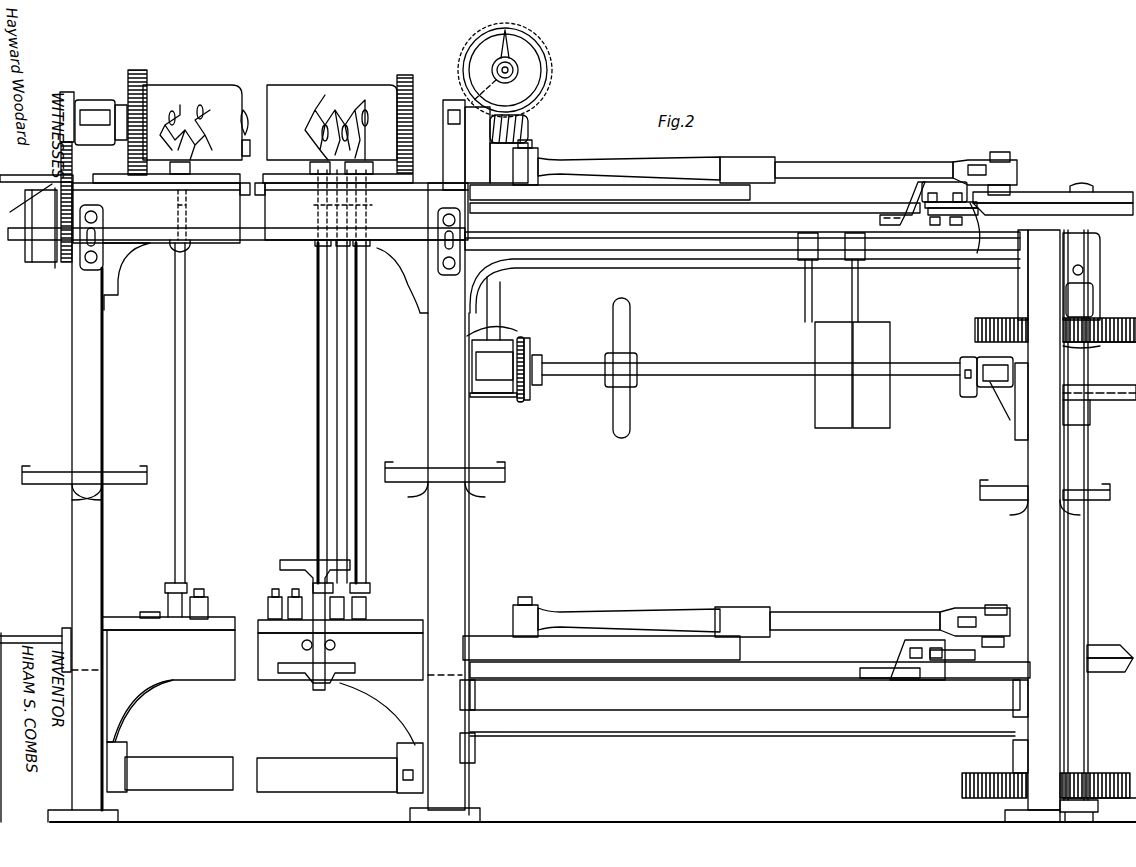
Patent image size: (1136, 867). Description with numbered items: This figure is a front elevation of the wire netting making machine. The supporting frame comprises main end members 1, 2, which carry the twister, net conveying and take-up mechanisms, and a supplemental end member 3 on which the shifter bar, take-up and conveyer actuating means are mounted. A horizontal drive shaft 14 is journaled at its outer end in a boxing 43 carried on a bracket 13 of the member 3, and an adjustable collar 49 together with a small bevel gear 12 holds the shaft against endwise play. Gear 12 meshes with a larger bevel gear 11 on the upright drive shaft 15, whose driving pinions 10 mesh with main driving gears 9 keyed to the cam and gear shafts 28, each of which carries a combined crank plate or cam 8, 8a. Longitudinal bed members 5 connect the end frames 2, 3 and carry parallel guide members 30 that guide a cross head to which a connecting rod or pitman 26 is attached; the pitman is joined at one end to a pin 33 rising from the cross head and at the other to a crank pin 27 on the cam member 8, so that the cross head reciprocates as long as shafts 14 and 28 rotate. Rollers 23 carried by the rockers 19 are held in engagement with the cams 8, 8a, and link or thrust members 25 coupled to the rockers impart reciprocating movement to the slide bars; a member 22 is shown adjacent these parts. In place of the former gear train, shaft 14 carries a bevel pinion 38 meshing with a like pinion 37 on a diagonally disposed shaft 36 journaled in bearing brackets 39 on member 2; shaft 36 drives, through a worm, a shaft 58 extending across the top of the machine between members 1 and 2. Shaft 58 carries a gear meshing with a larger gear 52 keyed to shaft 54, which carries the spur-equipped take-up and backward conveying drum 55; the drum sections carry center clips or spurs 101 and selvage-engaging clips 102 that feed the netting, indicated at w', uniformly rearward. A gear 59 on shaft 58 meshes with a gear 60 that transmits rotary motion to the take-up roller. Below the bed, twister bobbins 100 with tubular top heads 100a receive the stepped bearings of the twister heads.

The main end member 1 is at (86, 502).
The main end member 2 is at (441, 502).
The supplemental end member 3 is at (1020, 526).
The longitudinal bed member 5 is at (728, 270).
The cam member 8 is at (1052, 196).
The cam 8a is at (1112, 205).
The main driving gear 9 is at (975, 325).
The driving pinion 10 is at (1099, 570).
The bevel gear 11 is at (1110, 400).
The bevel gear 12 is at (1020, 355).
The bracket 13 is at (1000, 412).
The drive shaft 14 is at (745, 370).
The upright drive shaft 15 is at (1090, 300).
The rocker 19 is at (928, 205).
The bracket 22 is at (905, 205).
The roller 23 is at (958, 645).
The link or thrust member 25 is at (800, 205).
The connecting rod or pitman 26 is at (705, 163).
The wrist or crank pin 27 is at (1000, 152).
The cam and gear shaft 28 is at (1082, 186).
The guide member 30 is at (620, 192).
The pin 33 is at (536, 381).
The diagonally disposed shaft 36 is at (500, 310).
The bevel pinion 37 is at (582, 368).
The bevel pinion 38 is at (530, 390).
The bearing bracket 39 is at (492, 373).
The boxing 43 is at (990, 370).
The adjustable collar 49 is at (960, 365).
The gear 52 is at (392, 119).
The shaft 54 is at (247, 112).
The take-up and backward conveying drum 55 is at (332, 122).
The shaft 58 is at (253, 174).
The gear 59 is at (93, 110).
The gear 60 is at (66, 264).
The bobbin 100 is at (357, 335).
The tubular top head 100a is at (190, 250).
The center clip or spur 101 is at (200, 118).
The clip 102 is at (159, 113).
The yarn w' is at (235, 112).